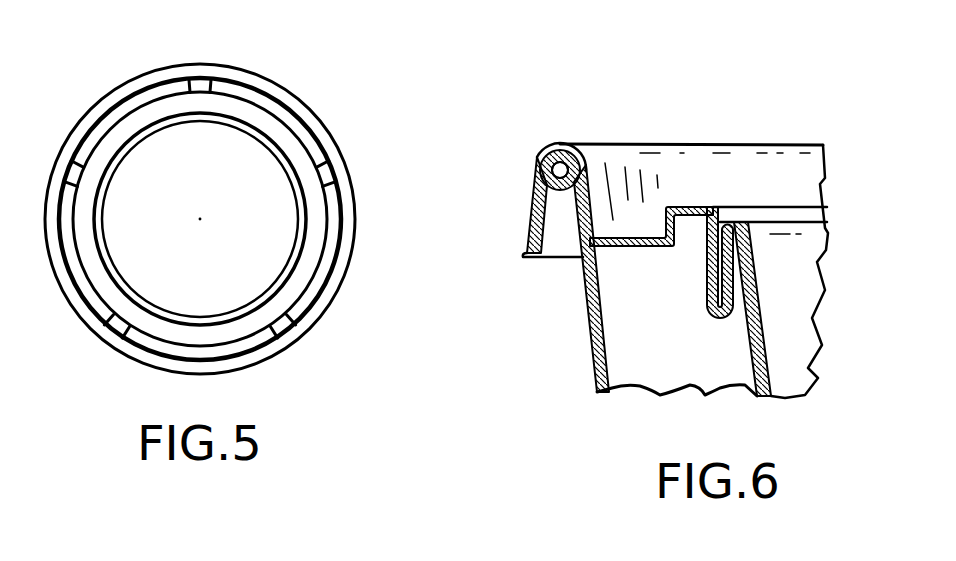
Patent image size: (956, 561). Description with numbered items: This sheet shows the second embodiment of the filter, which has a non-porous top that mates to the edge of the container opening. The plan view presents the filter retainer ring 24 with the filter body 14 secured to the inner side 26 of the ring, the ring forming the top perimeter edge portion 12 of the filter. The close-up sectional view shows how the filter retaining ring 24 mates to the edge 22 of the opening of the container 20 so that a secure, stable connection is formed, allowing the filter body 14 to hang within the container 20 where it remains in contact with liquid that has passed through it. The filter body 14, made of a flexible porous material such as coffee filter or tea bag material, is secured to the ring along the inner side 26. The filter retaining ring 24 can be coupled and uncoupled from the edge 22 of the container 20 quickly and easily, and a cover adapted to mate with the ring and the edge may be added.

In FIG. 5, the top perimeter edge portion 12 is at (347, 276).
In FIG. 5, the filter body portion 14 is at (292, 165).
In FIG. 6, the filter body portion 14 is at (758, 337).
In FIG. 6, the container 20 is at (585, 303).
In FIG. 6, the edge of the opening of container 22 is at (547, 150).
In FIG. 5, the filter retainer ring 24 is at (277, 128).
In FIG. 6, the filter retainer ring 24 is at (538, 207).
In FIG. 6, the inner side 26 is at (712, 292).